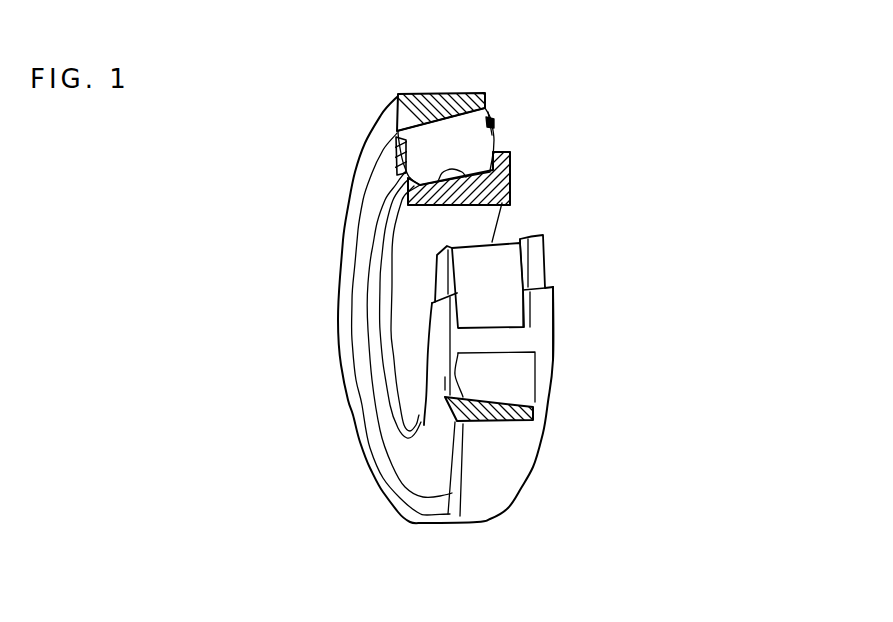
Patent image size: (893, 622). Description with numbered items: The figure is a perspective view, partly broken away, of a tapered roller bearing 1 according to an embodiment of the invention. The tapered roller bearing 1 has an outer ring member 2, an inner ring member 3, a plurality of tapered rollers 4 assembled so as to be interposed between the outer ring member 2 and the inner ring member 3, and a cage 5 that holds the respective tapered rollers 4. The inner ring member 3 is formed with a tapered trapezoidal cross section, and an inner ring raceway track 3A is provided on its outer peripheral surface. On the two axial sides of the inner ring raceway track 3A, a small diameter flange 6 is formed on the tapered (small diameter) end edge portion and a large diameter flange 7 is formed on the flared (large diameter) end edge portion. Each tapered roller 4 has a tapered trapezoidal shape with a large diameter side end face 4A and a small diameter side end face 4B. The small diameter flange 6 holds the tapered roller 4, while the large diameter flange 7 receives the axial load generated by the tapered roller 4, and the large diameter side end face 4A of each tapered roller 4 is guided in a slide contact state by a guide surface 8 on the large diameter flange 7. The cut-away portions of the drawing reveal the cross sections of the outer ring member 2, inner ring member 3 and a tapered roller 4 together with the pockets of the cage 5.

The tapered roller bearing 1 is at (480, 72).
The outer ring member 2 is at (423, 92).
The inner ring member 3 is at (508, 183).
The inner ring raceway track 3A is at (452, 206).
The tapered roller 4 is at (432, 137).
The large diameter side end face 4A is at (493, 137).
The small diameter side end face 4B is at (404, 163).
The cage 5 is at (541, 328).
The small diameter flange 6 is at (406, 192).
The large diameter flange 7 is at (509, 150).
The guide surface 8 is at (521, 238).